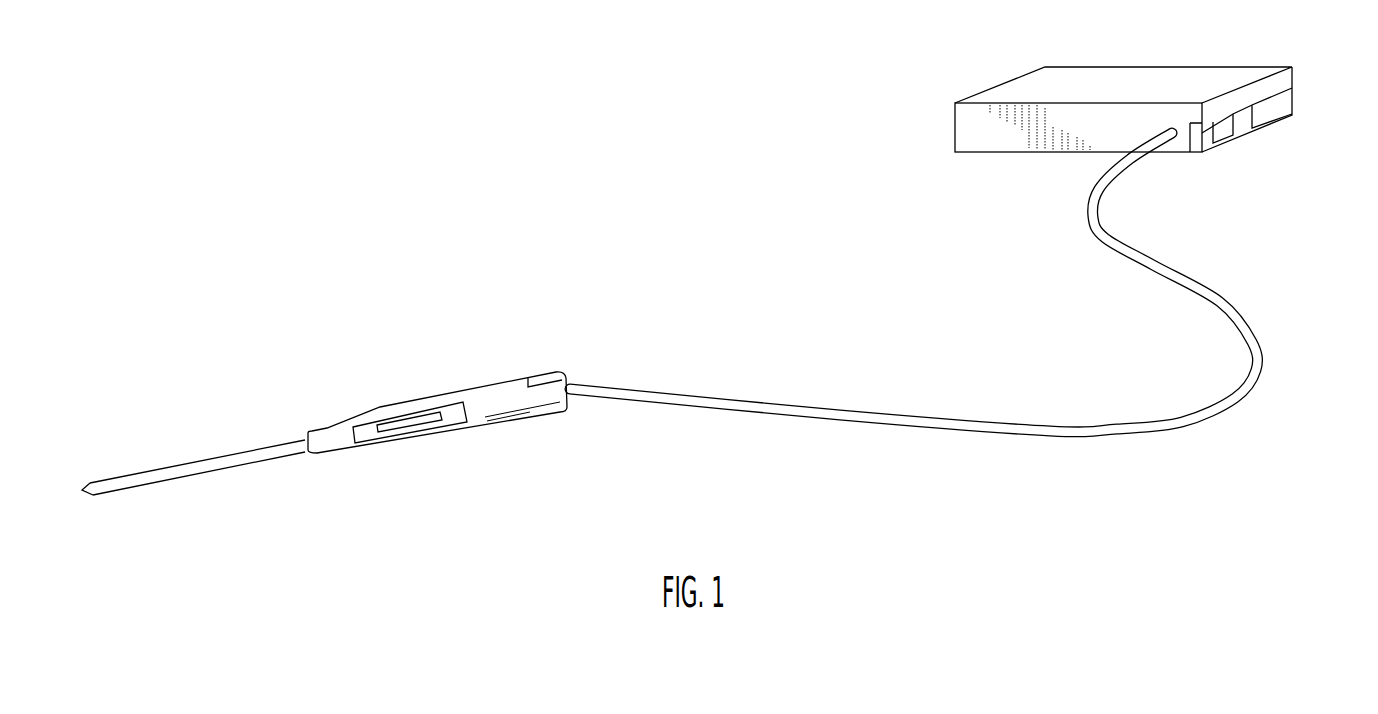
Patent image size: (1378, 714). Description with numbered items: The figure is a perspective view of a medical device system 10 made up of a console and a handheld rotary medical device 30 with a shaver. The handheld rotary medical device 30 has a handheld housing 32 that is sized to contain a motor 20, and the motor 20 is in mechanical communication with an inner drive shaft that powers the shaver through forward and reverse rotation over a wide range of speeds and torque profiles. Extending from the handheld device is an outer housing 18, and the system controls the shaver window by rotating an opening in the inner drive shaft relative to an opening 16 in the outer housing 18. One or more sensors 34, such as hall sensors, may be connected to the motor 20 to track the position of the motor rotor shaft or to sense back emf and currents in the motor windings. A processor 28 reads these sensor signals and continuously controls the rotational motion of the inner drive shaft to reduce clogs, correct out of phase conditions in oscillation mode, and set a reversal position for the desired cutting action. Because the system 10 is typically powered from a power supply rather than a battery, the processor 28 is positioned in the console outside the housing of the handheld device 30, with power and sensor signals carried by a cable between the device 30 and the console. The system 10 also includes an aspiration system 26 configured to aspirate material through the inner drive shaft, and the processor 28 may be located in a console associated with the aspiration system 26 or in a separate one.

The medical device system 10 is at (698, 82).
The opening in outer housing 16 is at (82, 487).
The outer housing 18 is at (230, 452).
The motor 20 is at (450, 423).
The aspiration system 26 is at (1280, 108).
The processor 28 is at (1223, 132).
The handheld rotary medical device 30 is at (317, 403).
The handheld housing 32 is at (453, 390).
The sensors 34 is at (400, 428).